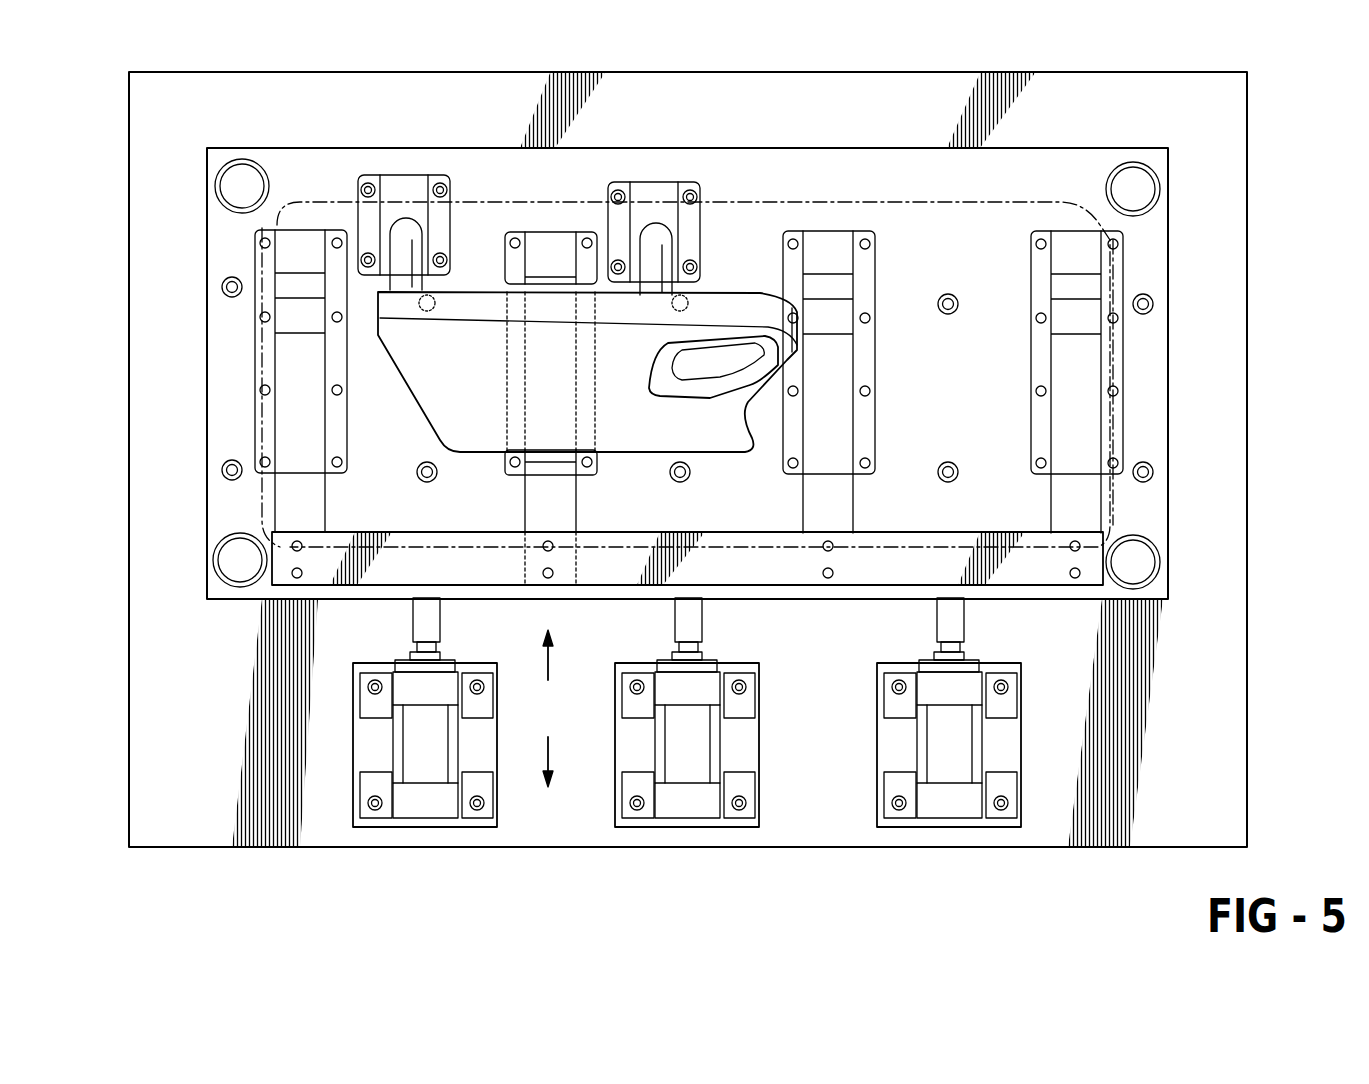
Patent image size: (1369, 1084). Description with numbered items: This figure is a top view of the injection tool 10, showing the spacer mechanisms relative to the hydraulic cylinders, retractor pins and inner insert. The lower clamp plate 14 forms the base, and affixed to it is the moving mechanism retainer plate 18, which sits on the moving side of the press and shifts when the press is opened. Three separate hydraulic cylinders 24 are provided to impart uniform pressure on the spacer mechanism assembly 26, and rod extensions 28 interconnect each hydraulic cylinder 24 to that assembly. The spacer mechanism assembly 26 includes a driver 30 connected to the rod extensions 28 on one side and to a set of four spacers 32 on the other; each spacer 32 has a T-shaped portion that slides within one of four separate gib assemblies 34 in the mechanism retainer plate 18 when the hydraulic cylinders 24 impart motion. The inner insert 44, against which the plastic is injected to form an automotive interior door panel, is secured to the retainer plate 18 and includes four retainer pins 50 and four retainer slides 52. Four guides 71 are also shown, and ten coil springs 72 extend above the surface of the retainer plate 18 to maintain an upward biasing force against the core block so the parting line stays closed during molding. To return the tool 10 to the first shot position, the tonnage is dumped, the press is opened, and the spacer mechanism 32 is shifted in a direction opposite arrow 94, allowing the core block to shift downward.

The injection tool 10 is at (103, 160).
The lower clamp plate 14 is at (1248, 570).
The mechanism retainer plate 18 is at (1152, 383).
The hydraulic cylinder 24 is at (422, 805).
The spacer mechanism assembly 26 is at (1075, 607).
The rod extension 28 is at (427, 620).
The driver 30 is at (293, 572).
The spacer 32 is at (550, 240).
The gib assembly 34 is at (590, 258).
The inner insert 44 is at (727, 303).
The retainer pin 50 is at (403, 223).
The retainer slide 52 is at (397, 182).
The guide 71 is at (1138, 190).
The coil spring 72 is at (1150, 303).
The arrow 94 is at (552, 668).